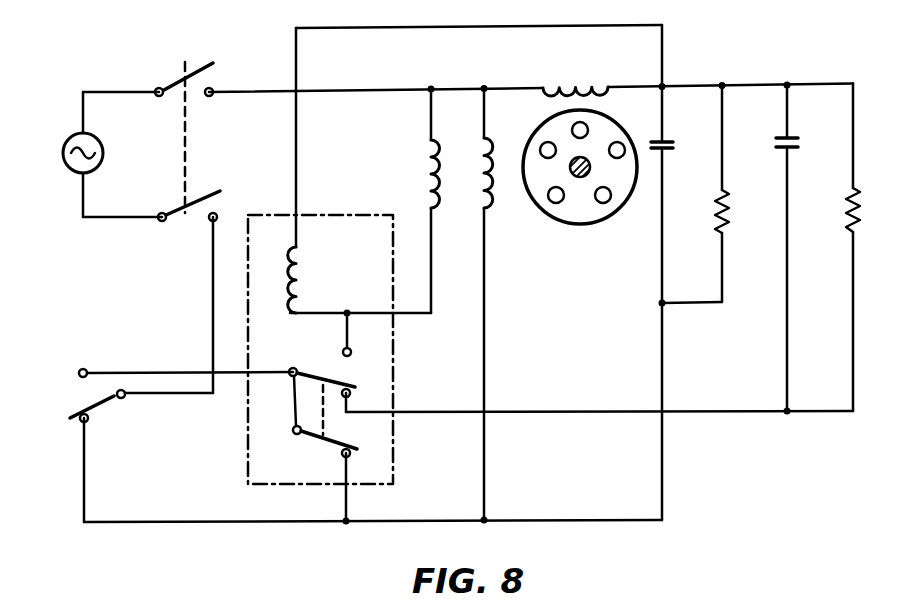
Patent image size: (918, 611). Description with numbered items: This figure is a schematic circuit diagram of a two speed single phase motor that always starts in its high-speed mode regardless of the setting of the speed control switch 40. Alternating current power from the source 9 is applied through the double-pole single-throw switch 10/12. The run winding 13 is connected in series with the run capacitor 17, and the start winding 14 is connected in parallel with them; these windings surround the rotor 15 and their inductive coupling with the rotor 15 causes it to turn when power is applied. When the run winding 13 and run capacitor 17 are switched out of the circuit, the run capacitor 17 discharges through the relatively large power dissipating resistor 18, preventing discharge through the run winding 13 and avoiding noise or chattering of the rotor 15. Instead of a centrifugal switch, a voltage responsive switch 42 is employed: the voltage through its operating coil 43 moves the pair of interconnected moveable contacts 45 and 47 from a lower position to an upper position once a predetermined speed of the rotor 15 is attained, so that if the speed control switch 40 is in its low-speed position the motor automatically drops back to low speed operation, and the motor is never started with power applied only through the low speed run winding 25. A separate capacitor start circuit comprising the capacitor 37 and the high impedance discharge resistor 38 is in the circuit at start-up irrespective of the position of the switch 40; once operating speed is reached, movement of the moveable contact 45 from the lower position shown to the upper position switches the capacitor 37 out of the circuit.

The source 9 is at (64, 150).
The double-pole single-throw switch 10 is at (175, 87).
The double-pole single-throw switch 12 is at (170, 221).
The run winding 13 is at (598, 88).
The start winding 14 is at (491, 139).
The rotor 15 is at (618, 213).
The run capacitor 17 is at (672, 152).
The power dissipating resistor 18 is at (728, 191).
The low speed run winding 25 is at (437, 140).
The capacitor 37 is at (791, 150).
The high impedance discharge resistor 38 is at (857, 190).
The speed control switch 40 is at (108, 400).
The voltage responsive switch 42 is at (250, 214).
The operating coil 43 is at (290, 268).
The moveable contact 45 is at (336, 380).
The moveable contact 47 is at (340, 448).